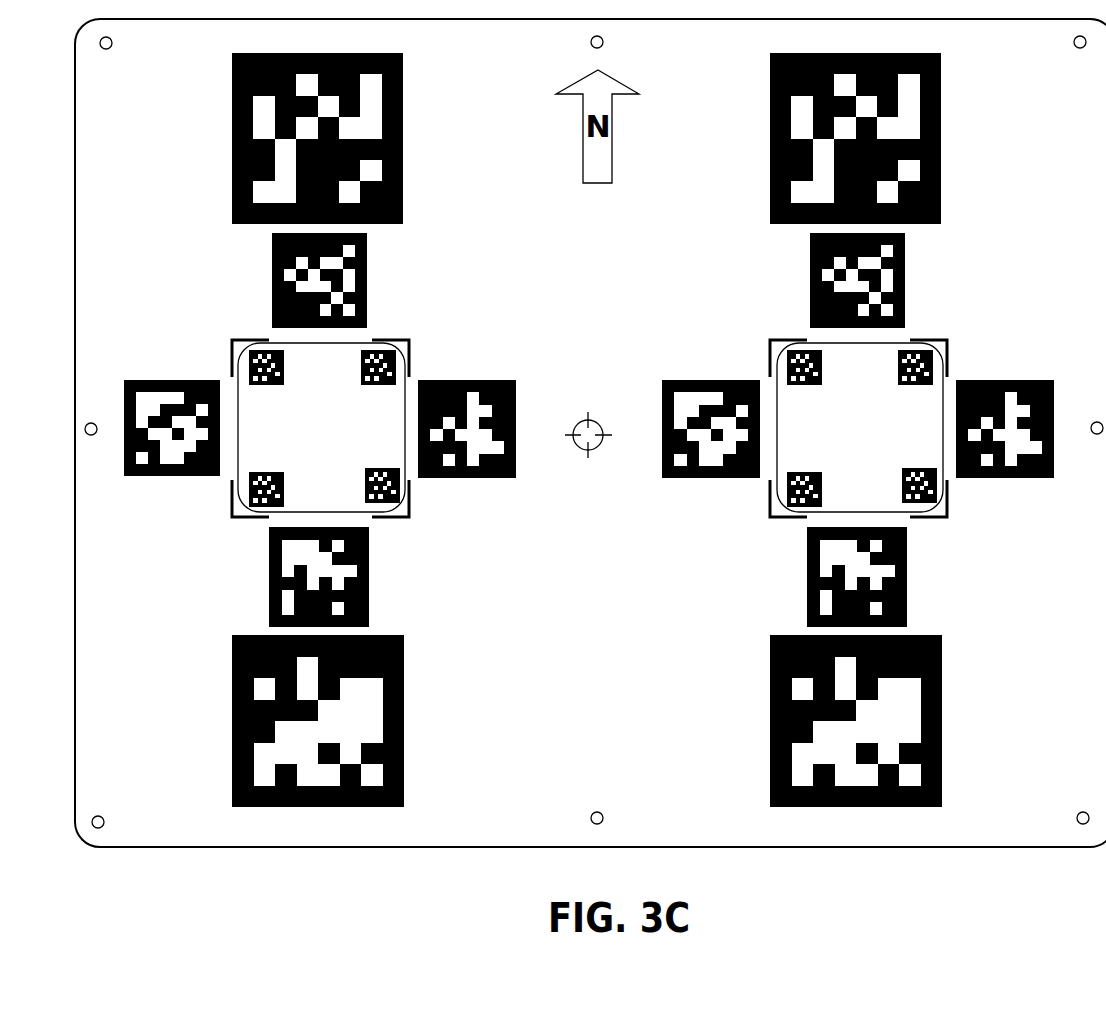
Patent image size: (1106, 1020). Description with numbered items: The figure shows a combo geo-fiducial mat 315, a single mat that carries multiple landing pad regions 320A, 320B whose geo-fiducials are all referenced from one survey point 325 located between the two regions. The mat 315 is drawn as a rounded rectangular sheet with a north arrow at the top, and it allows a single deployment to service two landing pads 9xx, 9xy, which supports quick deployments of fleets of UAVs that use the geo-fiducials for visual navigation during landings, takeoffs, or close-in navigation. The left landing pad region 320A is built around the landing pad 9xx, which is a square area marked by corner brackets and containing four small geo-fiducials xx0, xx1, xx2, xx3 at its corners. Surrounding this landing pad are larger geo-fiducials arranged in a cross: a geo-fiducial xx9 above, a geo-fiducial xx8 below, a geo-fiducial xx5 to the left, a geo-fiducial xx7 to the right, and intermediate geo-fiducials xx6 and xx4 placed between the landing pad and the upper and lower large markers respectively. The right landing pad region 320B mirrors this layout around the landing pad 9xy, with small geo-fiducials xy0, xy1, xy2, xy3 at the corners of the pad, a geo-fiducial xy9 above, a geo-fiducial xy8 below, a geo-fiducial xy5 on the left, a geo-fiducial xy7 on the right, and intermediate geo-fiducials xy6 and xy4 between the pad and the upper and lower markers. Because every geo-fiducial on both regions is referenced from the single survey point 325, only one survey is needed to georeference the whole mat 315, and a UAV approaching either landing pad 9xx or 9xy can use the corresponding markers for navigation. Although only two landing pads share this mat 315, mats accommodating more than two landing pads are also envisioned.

The combo geo-fiducial mat 315 is at (150, 134).
The landing pad region 320A is at (425, 341).
The landing pad region 320B is at (753, 338).
The survey point 325 is at (592, 452).
The geo-fiducial xx9 is at (317, 125).
The geo-fiducial xx8 is at (318, 735).
The geo-fiducial xx6 is at (340, 280).
The geo-fiducial xx4 is at (339, 577).
The geo-fiducial xx5 is at (172, 442).
The geo-fiducial xx7 is at (467, 442).
The landing pad 9xx is at (321, 427).
The geo-fiducial xx0 is at (268, 475).
The geo-fiducial xx1 is at (268, 381).
The geo-fiducial xx2 is at (372, 381).
The geo-fiducial xx3 is at (377, 473).
The geo-fiducial xy9 is at (855, 125).
The geo-fiducial xy8 is at (856, 735).
The geo-fiducial xy6 is at (878, 280).
The geo-fiducial xy4 is at (877, 577).
The geo-fiducial xy5 is at (711, 442).
The geo-fiducial xy7 is at (1005, 442).
The landing pad 9xy is at (860, 427).
The geo-fiducial xy0 is at (806, 475).
The geo-fiducial xy1 is at (806, 381).
The geo-fiducial xy2 is at (910, 381).
The geo-fiducial xy3 is at (915, 473).